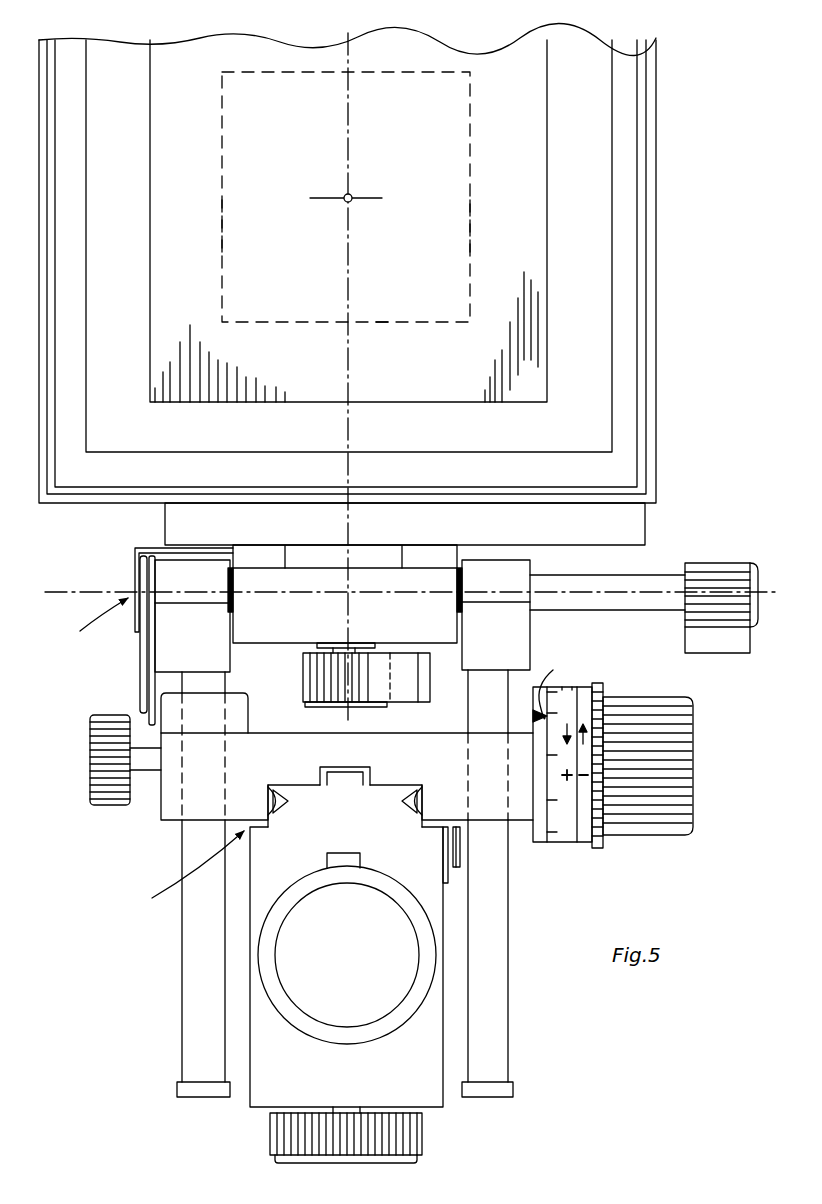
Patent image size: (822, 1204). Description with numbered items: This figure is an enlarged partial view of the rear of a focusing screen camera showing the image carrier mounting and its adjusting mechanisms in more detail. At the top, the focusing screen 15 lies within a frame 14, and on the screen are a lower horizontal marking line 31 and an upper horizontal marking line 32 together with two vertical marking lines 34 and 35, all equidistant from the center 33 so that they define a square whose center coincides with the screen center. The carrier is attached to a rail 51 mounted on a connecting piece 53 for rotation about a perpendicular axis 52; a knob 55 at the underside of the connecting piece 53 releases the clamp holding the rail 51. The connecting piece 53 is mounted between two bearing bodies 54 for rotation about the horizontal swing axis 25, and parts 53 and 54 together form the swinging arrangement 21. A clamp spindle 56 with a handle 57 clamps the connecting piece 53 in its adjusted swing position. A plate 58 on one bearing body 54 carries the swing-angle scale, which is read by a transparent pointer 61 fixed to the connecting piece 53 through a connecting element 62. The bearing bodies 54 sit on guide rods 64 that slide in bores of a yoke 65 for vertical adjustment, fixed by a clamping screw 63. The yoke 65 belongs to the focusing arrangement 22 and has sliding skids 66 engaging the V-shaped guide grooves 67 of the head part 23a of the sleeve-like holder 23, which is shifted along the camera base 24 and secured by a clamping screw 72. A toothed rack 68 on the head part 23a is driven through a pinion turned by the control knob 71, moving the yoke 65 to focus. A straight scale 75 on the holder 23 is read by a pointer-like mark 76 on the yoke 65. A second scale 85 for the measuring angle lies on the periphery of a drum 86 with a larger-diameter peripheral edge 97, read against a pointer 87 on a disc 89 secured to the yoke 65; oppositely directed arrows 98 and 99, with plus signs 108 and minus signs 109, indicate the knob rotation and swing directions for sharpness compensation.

The frame 14 is at (625, 247).
The focusing screen 15 is at (527, 172).
The swinging arrangement 21 is at (89, 625).
The focusing arrangement 22 is at (184, 870).
The holder 23 is at (265, 1085).
The head part 23a is at (375, 805).
The camera base 24 is at (383, 1030).
The swing axis 25 is at (72, 590).
The lower horizontal marking line 31 is at (388, 320).
The upper horizontal marking line 32 is at (297, 73).
The center 33 is at (352, 195).
The vertical marking line 34 is at (469, 210).
The vertical marking line 35 is at (223, 229).
The rail 51 is at (632, 524).
The perpendicular axis 52 is at (348, 442).
The connecting piece 53 is at (372, 578).
The bearing bodies 54 is at (218, 660).
The knob 55 is at (322, 690).
The clamp spindle 56 is at (658, 585).
The handle 57 is at (722, 578).
The plate 58 is at (155, 690).
The pointer 61 is at (139, 658).
The connecting element 62 is at (146, 550).
The clamping screw 63 is at (112, 798).
The guide rods 64 is at (188, 940).
The yoke 65 is at (176, 806).
The sliding skids 66 is at (270, 803).
The V-shaped guide grooves 67 is at (290, 804).
The toothed rack 68 is at (345, 780).
The control knob 71 is at (682, 808).
The clamping screw 72 is at (420, 1136).
The scale 75 is at (448, 878).
The mark 76 is at (460, 853).
The second scale 85 is at (563, 705).
The drum 86 is at (565, 845).
The pointer 87 is at (554, 683).
The disc 89 is at (540, 790).
The peripheral edge 97 is at (600, 850).
The directional arrow 98 is at (565, 729).
The directional arrow 99 is at (583, 740).
The plus sign 108 is at (560, 780).
The minus sign 109 is at (586, 780).